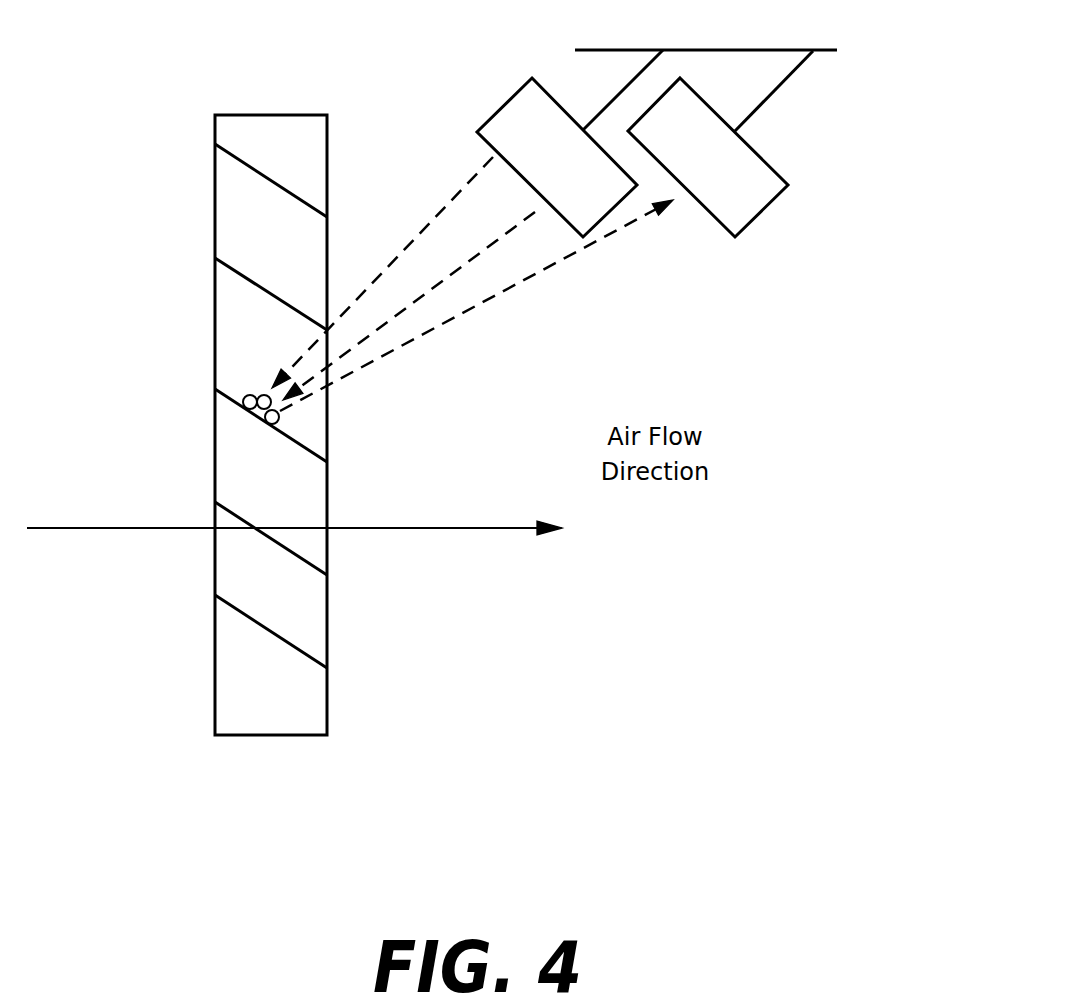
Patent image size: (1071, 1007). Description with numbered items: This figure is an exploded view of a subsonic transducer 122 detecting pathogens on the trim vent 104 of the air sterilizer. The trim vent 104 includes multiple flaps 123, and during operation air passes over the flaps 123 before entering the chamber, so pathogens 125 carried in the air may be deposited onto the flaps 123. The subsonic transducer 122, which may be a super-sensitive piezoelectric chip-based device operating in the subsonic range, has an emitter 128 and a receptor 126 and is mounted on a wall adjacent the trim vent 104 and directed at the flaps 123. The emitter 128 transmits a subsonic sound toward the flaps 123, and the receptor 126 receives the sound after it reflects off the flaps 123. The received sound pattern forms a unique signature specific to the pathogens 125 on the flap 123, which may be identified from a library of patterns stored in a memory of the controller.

The trim vent 104 is at (222, 200).
The flaps 123 is at (240, 277).
The pathogens 125 is at (250, 408).
The subsonic transducer 122 is at (585, 230).
The emitter 128 is at (515, 107).
The receptor 126 is at (772, 202).